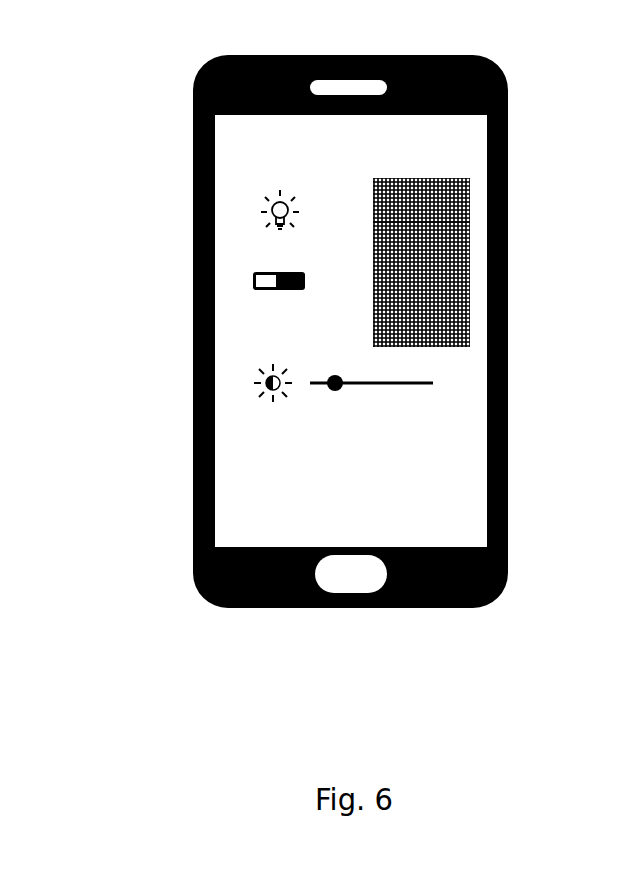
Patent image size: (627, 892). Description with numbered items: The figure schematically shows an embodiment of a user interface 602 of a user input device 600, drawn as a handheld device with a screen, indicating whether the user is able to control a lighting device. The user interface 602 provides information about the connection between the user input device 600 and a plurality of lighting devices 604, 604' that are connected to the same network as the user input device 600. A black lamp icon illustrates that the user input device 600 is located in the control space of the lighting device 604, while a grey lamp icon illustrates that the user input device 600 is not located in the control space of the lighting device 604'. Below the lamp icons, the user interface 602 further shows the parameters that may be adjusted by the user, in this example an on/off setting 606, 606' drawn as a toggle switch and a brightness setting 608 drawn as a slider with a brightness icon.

The user input device 600 is at (195, 568).
The user interface 602 is at (260, 473).
The lighting device 604 is at (186, 205).
The lighting device 604' is at (496, 262).
The on/off setting 606 is at (189, 266).
The on/off setting 606' is at (496, 284).
The brightness setting 608 is at (258, 385).